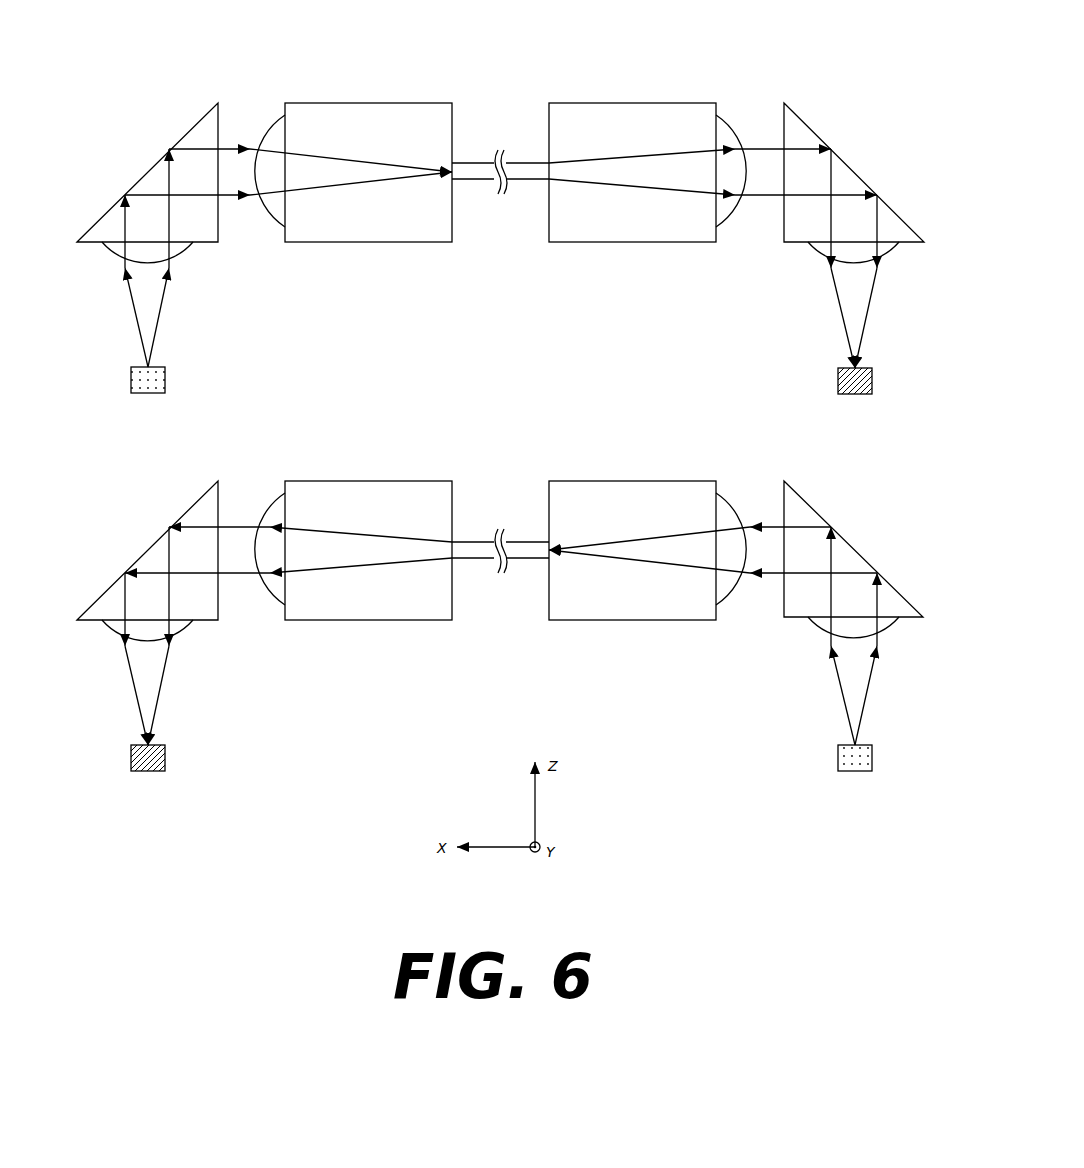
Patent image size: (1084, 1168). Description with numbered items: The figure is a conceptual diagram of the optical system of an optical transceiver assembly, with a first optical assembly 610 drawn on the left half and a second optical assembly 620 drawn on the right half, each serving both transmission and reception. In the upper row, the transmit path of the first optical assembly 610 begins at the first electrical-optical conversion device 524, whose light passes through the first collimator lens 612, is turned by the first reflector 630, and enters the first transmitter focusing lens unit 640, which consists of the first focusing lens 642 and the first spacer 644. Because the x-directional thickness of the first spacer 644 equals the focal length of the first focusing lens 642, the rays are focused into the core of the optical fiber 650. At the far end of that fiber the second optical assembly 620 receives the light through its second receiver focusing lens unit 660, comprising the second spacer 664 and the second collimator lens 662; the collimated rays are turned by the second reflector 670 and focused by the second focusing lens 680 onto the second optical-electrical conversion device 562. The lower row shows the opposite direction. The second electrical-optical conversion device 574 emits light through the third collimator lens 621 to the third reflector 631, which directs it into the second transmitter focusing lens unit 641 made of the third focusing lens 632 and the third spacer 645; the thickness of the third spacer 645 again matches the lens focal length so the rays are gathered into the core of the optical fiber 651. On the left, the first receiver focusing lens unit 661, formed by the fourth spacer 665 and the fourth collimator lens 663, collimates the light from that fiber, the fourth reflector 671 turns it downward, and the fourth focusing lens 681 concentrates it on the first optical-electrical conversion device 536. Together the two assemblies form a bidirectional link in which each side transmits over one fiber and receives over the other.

The first optical assembly 610 is at (388, 28).
The second optical assembly 620 is at (653, 28).
The first reflector 630 is at (147, 176).
The first collimator lens 612 is at (107, 253).
The first electrical-optical conversion device 524 is at (130, 385).
The first transmitter focusing lens unit 640 is at (344, 222).
The first focusing lens 642 is at (273, 230).
The first spacer 644 is at (368, 203).
The optical fiber 650 is at (531, 160).
The optical fiber 651 is at (531, 540).
The second receiver focusing lens unit 660 is at (654, 222).
The second spacer 664 is at (663, 243).
The second collimator lens 662 is at (733, 209).
The second reflector 670 is at (858, 176).
The second focusing lens 680 is at (897, 255).
The second optical-electrical conversion device 562 is at (873, 383).
The fourth reflector 671 is at (147, 554).
The fourth focusing lens 681 is at (107, 631).
The first optical-electrical conversion device 536 is at (130, 763).
The first receiver focusing lens unit 661 is at (344, 601).
The fourth collimator lens 663 is at (273, 608).
The fourth spacer 665 is at (368, 580).
The second transmitter focusing lens unit 641 is at (654, 601).
The third spacer 645 is at (663, 621).
The third focusing lens 632 is at (733, 586).
The third reflector 631 is at (858, 553).
The third collimator lens 621 is at (897, 633).
The second electrical-optical conversion device 574 is at (873, 763).